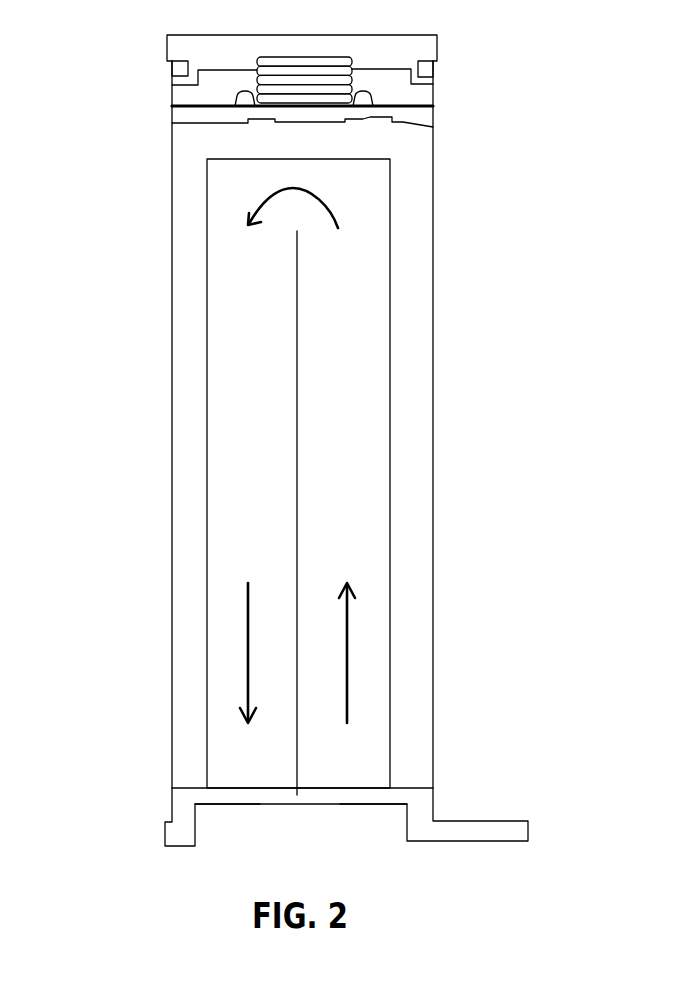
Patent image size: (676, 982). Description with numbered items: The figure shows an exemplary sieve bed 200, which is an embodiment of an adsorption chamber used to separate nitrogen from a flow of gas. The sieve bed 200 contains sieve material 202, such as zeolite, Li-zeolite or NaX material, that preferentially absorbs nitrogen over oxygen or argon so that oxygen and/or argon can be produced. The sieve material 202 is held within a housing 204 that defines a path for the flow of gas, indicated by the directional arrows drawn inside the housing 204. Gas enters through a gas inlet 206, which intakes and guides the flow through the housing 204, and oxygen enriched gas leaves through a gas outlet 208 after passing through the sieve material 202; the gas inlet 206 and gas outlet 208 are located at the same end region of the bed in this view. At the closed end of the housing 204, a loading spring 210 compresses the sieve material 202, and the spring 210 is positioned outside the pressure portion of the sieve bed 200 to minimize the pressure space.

The sieve bed 200 is at (546, 86).
The sieve material 202 is at (340, 285).
The housing 204 is at (398, 539).
The gas inlet 206 is at (350, 812).
The gas outlet 208 is at (250, 814).
The spring 210 is at (242, 65).